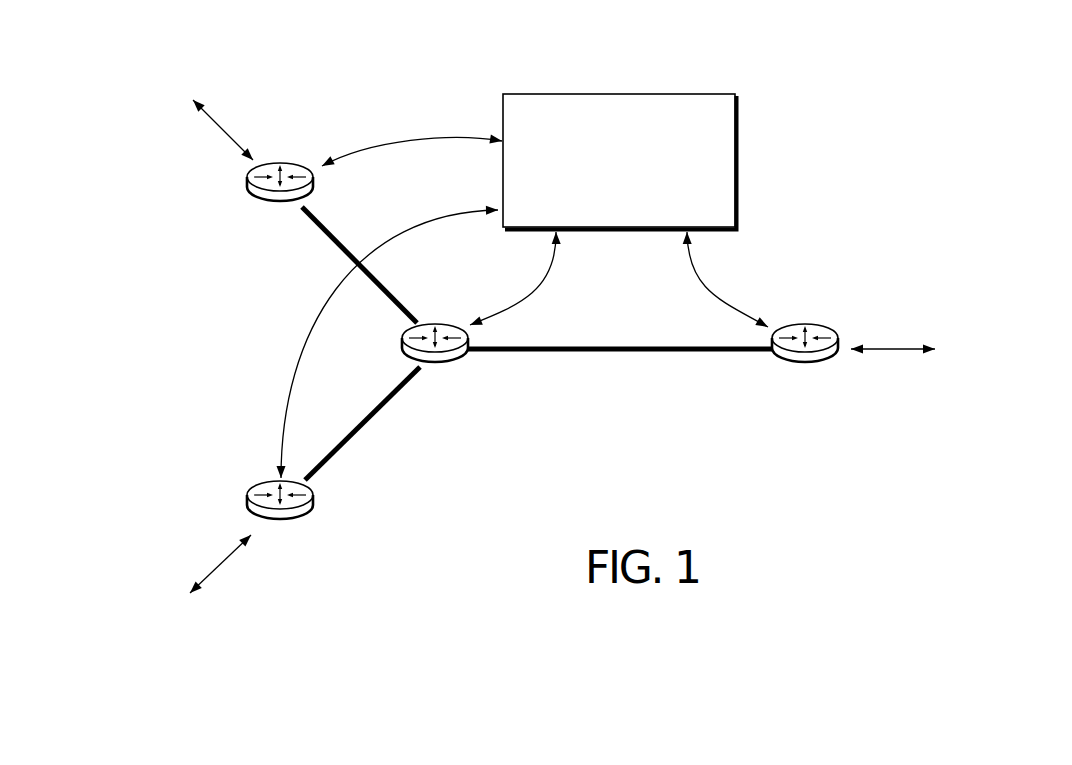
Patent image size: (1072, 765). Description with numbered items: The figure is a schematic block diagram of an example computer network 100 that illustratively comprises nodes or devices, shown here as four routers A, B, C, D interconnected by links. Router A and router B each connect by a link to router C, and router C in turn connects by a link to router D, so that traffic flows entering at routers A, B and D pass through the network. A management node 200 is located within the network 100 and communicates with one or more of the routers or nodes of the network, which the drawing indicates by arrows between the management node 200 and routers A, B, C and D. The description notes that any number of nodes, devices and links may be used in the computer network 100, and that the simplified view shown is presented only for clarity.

The computer network 100 is at (933, 147).
The management node 200 is at (598, 206).
The router A is at (264, 206).
The router B is at (268, 481).
The router C is at (452, 372).
The router D is at (818, 370).